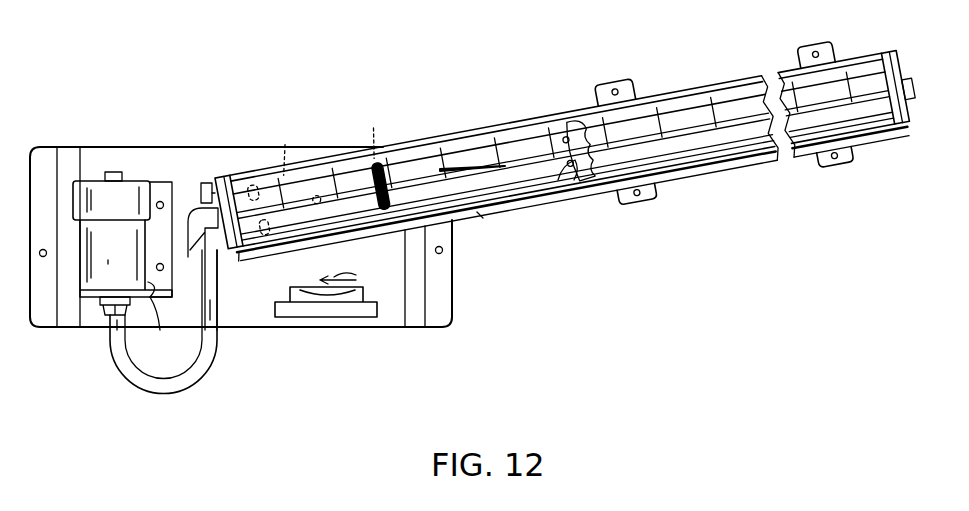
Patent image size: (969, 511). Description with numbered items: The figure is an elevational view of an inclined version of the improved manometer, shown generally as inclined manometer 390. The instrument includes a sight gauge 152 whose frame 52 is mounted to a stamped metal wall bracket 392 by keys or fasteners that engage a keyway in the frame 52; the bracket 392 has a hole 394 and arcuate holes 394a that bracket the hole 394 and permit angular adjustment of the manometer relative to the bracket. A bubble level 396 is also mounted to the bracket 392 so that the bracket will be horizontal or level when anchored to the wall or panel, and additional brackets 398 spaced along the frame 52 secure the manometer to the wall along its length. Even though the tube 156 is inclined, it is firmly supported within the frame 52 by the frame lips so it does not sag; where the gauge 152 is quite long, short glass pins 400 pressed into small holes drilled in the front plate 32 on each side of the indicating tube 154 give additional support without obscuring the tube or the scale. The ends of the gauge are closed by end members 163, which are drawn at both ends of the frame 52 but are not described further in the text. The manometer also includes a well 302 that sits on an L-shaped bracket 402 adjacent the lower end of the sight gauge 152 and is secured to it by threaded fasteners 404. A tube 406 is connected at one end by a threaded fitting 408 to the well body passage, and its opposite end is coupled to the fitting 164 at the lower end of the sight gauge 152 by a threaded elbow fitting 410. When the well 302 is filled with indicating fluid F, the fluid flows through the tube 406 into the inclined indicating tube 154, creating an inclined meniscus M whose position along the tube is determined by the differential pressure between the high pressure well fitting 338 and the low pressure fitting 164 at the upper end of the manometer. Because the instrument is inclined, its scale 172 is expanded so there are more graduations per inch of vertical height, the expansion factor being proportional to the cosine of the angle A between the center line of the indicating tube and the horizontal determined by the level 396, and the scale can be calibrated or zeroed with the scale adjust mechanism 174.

The wall bracket 392 is at (385, 315).
The well 302 is at (128, 172).
The high pressure well fitting 338 is at (112, 170).
The threaded fasteners 404 is at (163, 202).
The threaded fitting 408 is at (102, 312).
The tube 406 is at (185, 385).
The threaded elbow fitting 410 is at (227, 269).
The scale adjust mechanism 174 is at (220, 167).
The L-shaped bracket 402 is at (573, 178).
The fitting 164 is at (905, 82).
The sight gauge 152 is at (508, 80).
The inclined manometer 390 is at (396, 77).
The indicating tube 154 is at (740, 153).
The front plate 32 is at (543, 180).
The scale 172 is at (680, 163).
The frame 52 is at (318, 236).
The tube 156 is at (887, 175).
The end cap 163 is at (920, 160).
The additional brackets 398 is at (810, 58).
The hole 394 is at (318, 170).
The arcuate holes 394a is at (388, 143).
The glass pins 400 is at (570, 128).
The meniscus M is at (460, 167).
The bubble level 396 is at (320, 300).
The angle A is at (348, 275).
The indicating fluid F is at (488, 226).